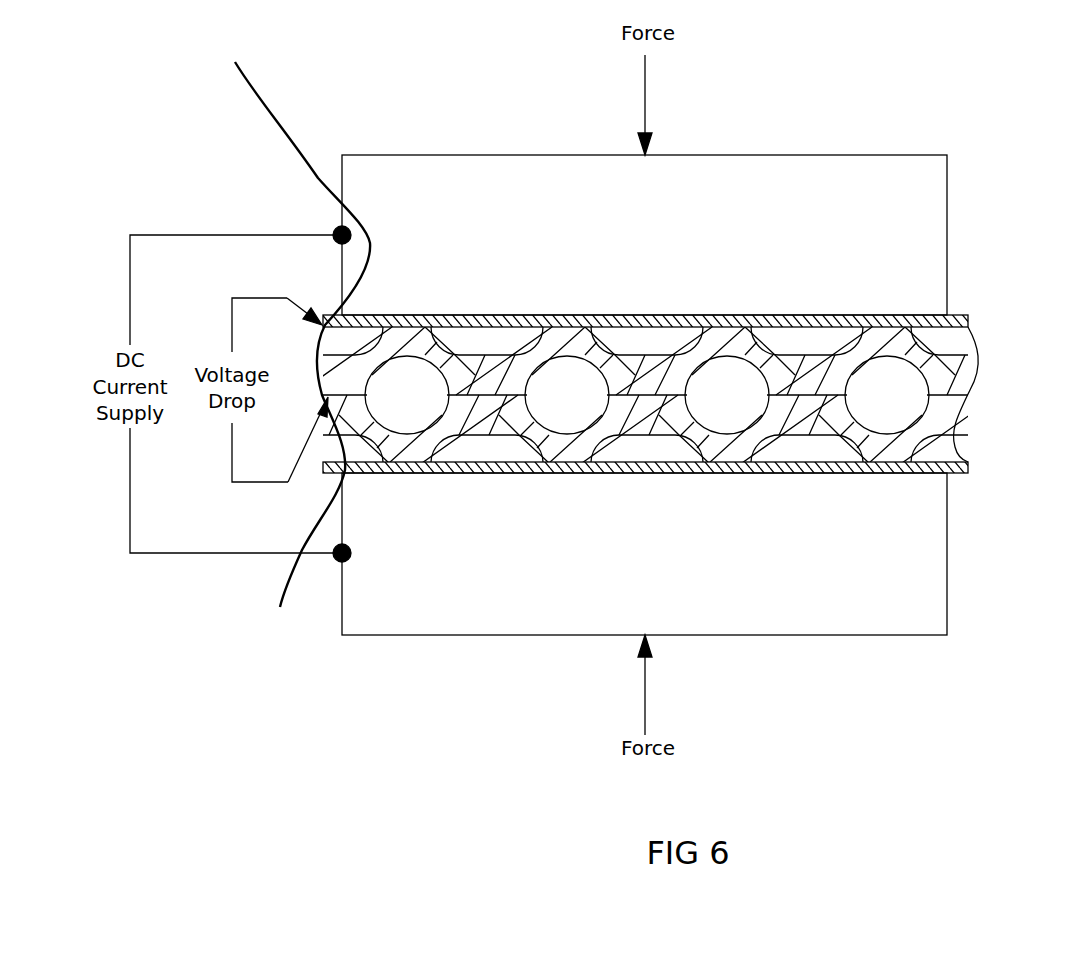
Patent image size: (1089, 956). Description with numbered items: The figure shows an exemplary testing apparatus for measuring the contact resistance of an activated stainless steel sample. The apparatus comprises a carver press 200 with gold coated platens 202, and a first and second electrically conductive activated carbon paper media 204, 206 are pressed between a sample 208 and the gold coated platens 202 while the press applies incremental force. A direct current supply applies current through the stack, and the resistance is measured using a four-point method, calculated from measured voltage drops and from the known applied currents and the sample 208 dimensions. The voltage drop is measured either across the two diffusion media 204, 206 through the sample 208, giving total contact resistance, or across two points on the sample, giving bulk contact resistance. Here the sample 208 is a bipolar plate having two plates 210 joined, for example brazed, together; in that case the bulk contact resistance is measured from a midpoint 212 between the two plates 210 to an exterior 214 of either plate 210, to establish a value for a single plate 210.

The carver press 200 is at (331, 125).
The gold coated platens 202 is at (470, 170).
The first electrically conductive activated carbon paper medium 204 is at (963, 315).
The second electrically conductive activated carbon paper medium 206 is at (955, 470).
The sample 208 is at (978, 394).
The plates 210 is at (980, 357).
The midpoint 212 is at (326, 408).
The exterior 214 is at (283, 336).